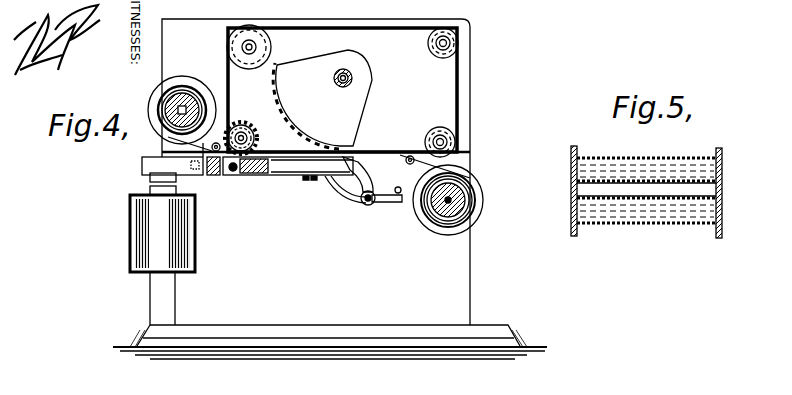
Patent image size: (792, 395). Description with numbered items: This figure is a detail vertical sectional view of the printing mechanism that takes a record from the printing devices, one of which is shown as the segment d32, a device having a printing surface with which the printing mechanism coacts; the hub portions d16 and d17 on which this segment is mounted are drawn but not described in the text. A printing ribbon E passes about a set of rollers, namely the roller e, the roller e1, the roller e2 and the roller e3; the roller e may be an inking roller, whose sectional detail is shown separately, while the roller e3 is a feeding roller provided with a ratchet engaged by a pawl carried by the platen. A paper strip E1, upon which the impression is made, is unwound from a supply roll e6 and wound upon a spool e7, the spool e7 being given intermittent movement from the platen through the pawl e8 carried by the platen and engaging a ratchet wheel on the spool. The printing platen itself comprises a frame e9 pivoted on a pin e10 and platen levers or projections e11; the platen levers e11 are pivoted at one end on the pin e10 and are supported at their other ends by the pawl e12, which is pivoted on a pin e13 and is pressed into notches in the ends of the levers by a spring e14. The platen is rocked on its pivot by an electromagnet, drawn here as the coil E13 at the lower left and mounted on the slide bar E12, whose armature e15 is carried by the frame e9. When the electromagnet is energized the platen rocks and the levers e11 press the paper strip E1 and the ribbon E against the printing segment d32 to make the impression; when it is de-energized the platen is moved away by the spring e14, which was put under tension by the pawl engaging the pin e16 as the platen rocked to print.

In FIG. 4, the printing ribbon E is at (377, 33).
In FIG. 5, the inking roller e is at (646, 187).
In FIG. 4, the roller e1 is at (435, 51).
In FIG. 4, the roller e2 is at (434, 134).
In FIG. 4, the feeding roller e3 is at (244, 126).
In FIG. 4, the supply roll e6 is at (452, 195).
In FIG. 4, the spool e7 is at (184, 93).
In FIG. 4, the pawl e8 is at (153, 153).
In FIG. 4, the frame e9 is at (183, 170).
In FIG. 4, the pin e10 is at (237, 178).
In FIG. 4, the platen levers e11 is at (297, 172).
In FIG. 4, the pawl e12 is at (363, 207).
In FIG. 4, the pin e13 is at (378, 206).
In FIG. 4, the spring e14 is at (343, 196).
In FIG. 4, the armature e15 is at (150, 178).
In FIG. 4, the pin e16 is at (404, 184).
In FIG. 4, the paper strip E1 is at (374, 160).
In FIG. 4, the carriage bar E12 is at (288, 182).
In FIG. 4, the electromagnet E13 is at (162, 255).
In FIG. 4, the shaft d16 is at (343, 87).
In FIG. 4, the hub d17 is at (352, 80).
In FIG. 4, the printing segment d32 is at (322, 99).